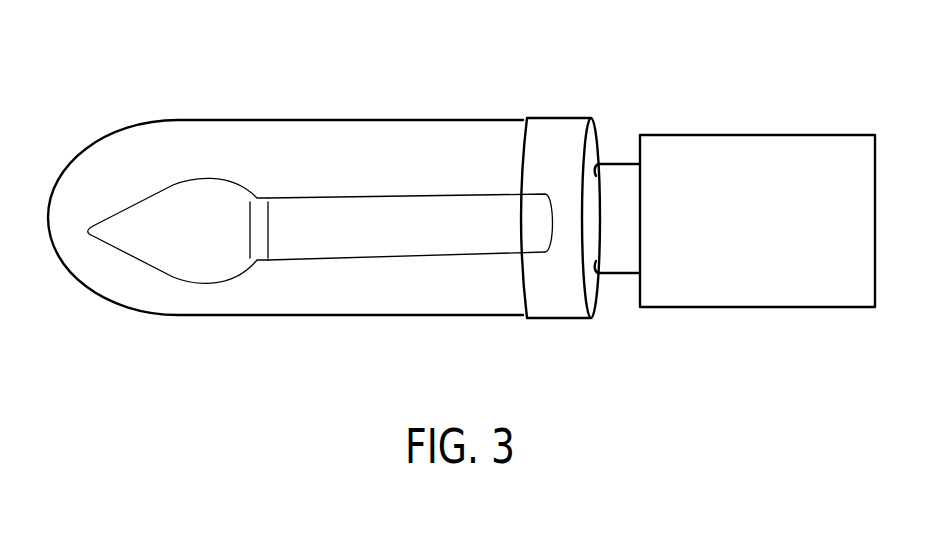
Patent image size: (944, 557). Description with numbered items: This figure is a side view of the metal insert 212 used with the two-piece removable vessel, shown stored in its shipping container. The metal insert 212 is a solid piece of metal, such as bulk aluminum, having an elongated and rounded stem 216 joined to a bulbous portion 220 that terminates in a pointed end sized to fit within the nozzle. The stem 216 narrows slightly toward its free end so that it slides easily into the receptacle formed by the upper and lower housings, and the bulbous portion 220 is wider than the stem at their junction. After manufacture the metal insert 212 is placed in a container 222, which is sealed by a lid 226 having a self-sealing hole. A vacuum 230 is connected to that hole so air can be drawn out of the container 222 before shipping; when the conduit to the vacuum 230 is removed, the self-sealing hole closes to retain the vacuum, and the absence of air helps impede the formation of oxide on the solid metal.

The metal insert 212 is at (309, 82).
The stem 216 is at (428, 210).
The bulbous portion 220 is at (178, 213).
The container 222 is at (277, 316).
The lid 226 is at (620, 141).
The vacuum 230 is at (775, 152).